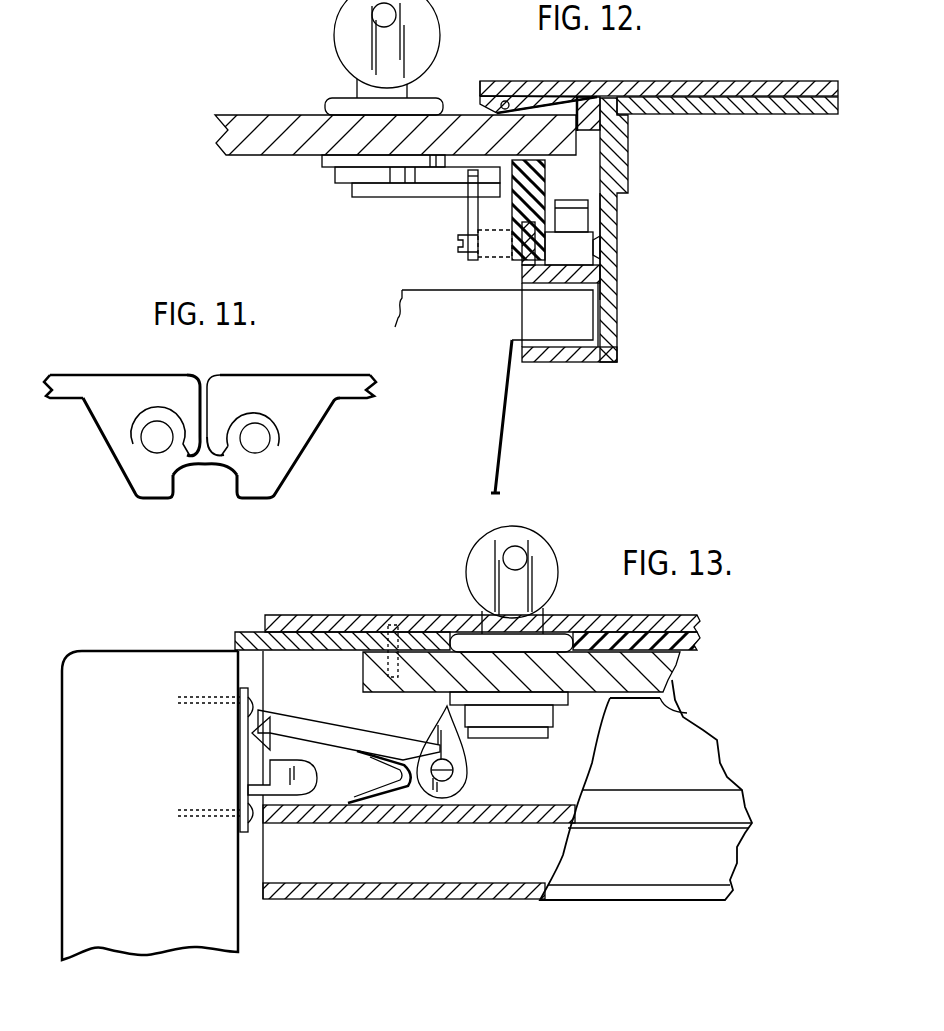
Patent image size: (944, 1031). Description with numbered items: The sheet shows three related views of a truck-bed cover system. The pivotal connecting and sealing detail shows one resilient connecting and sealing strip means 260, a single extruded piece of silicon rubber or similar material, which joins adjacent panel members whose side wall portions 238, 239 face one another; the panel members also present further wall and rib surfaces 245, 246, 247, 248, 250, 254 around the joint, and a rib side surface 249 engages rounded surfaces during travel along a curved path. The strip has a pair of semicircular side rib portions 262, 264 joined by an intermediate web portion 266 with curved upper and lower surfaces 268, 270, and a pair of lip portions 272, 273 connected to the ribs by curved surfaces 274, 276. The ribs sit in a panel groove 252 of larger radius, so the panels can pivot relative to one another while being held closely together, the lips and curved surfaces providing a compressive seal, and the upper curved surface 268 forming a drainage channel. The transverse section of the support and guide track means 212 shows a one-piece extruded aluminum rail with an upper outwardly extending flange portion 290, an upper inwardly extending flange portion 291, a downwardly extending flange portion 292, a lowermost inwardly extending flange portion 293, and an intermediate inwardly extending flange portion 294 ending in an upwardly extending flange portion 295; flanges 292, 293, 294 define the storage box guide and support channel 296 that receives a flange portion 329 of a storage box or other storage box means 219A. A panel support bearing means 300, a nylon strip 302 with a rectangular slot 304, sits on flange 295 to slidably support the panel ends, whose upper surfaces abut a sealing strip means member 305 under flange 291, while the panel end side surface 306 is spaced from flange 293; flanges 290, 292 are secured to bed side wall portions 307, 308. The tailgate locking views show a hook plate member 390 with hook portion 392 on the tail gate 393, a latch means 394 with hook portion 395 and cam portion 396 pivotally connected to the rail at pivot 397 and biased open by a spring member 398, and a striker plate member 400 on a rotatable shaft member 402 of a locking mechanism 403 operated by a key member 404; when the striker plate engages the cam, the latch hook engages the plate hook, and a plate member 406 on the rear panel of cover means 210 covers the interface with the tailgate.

In FIG. 12, the cover means 210 is at (250, 155).
In FIG. 13, the cover means 210 is at (675, 683).
In FIG. 12, the support and guide track means 212 is at (618, 364).
In FIG. 12, the storage box means 219A is at (503, 438).
In FIG. 11, the panel side wall portion 238 is at (333, 375).
In FIG. 11, the panel side wall portion 239 is at (83, 390).
In FIG. 11, the right leg 245 is at (327, 416).
In FIG. 11, the left leg 246 is at (100, 432).
In FIG. 11, the right foot 247 is at (273, 494).
In FIG. 11, the left foot 248 is at (147, 498).
In FIG. 11, the rib side surface 249 is at (217, 380).
In FIG. 11, the left shoulder 250 is at (186, 388).
In FIG. 11, the panel groove 252 is at (227, 442).
In FIG. 11, the left wall 254 is at (140, 407).
In FIG. 11, the resilient connecting and sealing strip means 260 is at (220, 480).
In FIG. 11, the side rib portion 262 is at (141, 437).
In FIG. 11, the side rib portion 264 is at (270, 428).
In FIG. 11, the intermediate web portion 266 is at (197, 475).
In FIG. 11, the upper curved surface 268 is at (210, 448).
In FIG. 11, the lower curved surface 270 is at (227, 477).
In FIG. 11, the lip portion 272 is at (177, 482).
In FIG. 11, the lip portion 273 is at (237, 498).
In FIG. 11, the curved surface 274 is at (173, 470).
In FIG. 11, the curved surface 276 is at (267, 463).
In FIG. 12, the upper outwardly extending flange portion 290 is at (770, 92).
In FIG. 12, the upper inwardly extending flange portion 291 is at (537, 92).
In FIG. 13, the upper inwardly extending flange portion 291 is at (360, 624).
In FIG. 12, the downwardly extending flange portion 292 is at (617, 185).
In FIG. 12, the lowermost inwardly extending flange portion 293 is at (555, 362).
In FIG. 13, the lowermost inwardly extending flange portion 293 is at (385, 884).
In FIG. 13, the intermediate inwardly extending flange portion 294 is at (490, 808).
In FIG. 12, the upwardly extending flange portion 295 is at (530, 270).
In FIG. 13, the upwardly extending flange portion 295 is at (730, 810).
In FIG. 12, the storage box guide and support channel 296 is at (585, 277).
In FIG. 13, the storage box guide and support channel 296 is at (477, 870).
In FIG. 12, the panel support bearing means 300 is at (509, 214).
In FIG. 13, the panel support bearing means 300 is at (683, 762).
In FIG. 12, the strip 302 is at (547, 190).
In FIG. 12, the rectangular slot 304 is at (545, 242).
In FIG. 12, the sealing strip means member 305 is at (478, 107).
In FIG. 13, the sealing strip means member 305 is at (706, 643).
In FIG. 12, the end side surface 306 is at (580, 125).
In FIG. 12, the bed side wall portion 307 is at (803, 116).
In FIG. 12, the bed side wall portion 308 is at (625, 137).
In FIG. 12, the flange portion 329 is at (563, 327).
In FIG. 13, the hook plate member 390 is at (242, 745).
In FIG. 13, the hook portion 392 is at (297, 784).
In FIG. 13, the tail gate 393 is at (230, 927).
In FIG. 12, the latch means 394 is at (470, 258).
In FIG. 13, the latch means 394 is at (310, 727).
In FIG. 12, the hook portion 395 is at (572, 220).
In FIG. 13, the hook portion 395 is at (253, 731).
In FIG. 12, the cam portion 396 is at (468, 208).
In FIG. 13, the cam portion 396 is at (462, 753).
In FIG. 12, the pivot 397 is at (603, 248).
In FIG. 13, the pivot 397 is at (449, 775).
In FIG. 13, the spring member 398 is at (398, 790).
In FIG. 12, the striker plate member 400 is at (352, 195).
In FIG. 13, the striker plate member 400 is at (509, 715).
In FIG. 12, the rotatable shaft member 402 is at (334, 172).
In FIG. 12, the locking mechanism 403 is at (326, 103).
In FIG. 13, the locking mechanism 403 is at (511, 643).
In FIG. 12, the key member 404 is at (334, 42).
In FIG. 13, the key member 404 is at (470, 560).
In FIG. 13, the plate member 406 is at (323, 638).